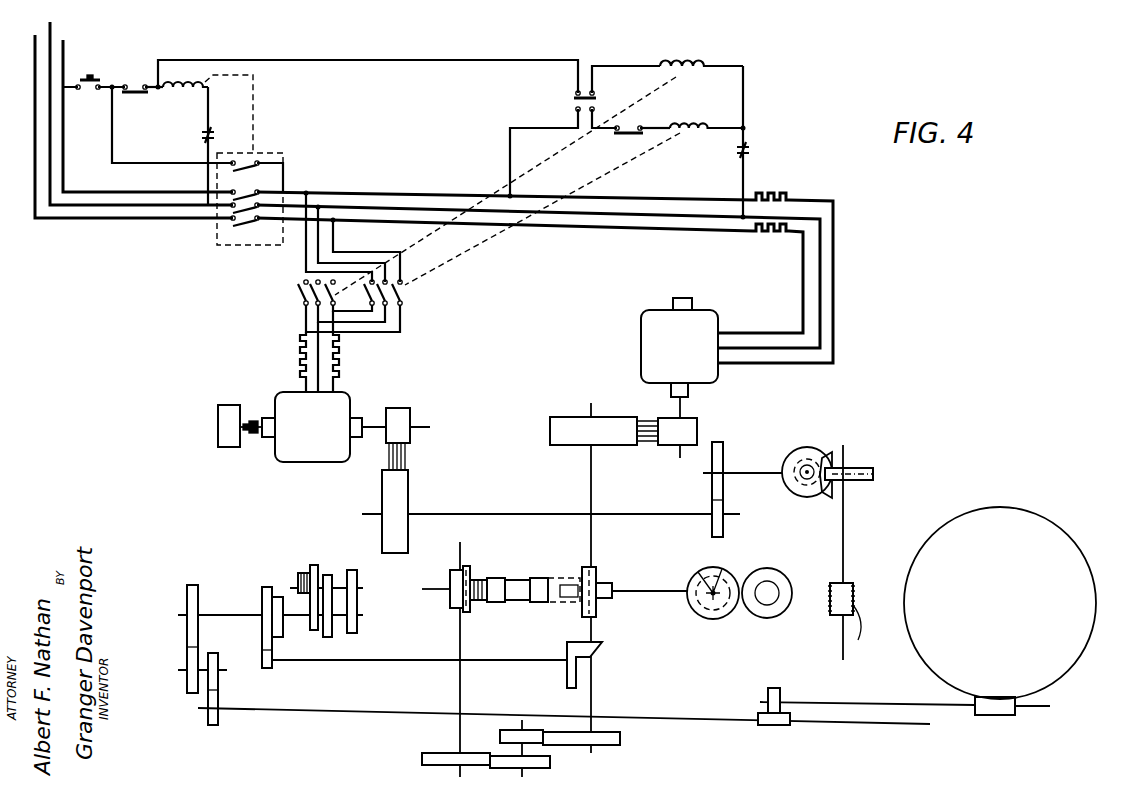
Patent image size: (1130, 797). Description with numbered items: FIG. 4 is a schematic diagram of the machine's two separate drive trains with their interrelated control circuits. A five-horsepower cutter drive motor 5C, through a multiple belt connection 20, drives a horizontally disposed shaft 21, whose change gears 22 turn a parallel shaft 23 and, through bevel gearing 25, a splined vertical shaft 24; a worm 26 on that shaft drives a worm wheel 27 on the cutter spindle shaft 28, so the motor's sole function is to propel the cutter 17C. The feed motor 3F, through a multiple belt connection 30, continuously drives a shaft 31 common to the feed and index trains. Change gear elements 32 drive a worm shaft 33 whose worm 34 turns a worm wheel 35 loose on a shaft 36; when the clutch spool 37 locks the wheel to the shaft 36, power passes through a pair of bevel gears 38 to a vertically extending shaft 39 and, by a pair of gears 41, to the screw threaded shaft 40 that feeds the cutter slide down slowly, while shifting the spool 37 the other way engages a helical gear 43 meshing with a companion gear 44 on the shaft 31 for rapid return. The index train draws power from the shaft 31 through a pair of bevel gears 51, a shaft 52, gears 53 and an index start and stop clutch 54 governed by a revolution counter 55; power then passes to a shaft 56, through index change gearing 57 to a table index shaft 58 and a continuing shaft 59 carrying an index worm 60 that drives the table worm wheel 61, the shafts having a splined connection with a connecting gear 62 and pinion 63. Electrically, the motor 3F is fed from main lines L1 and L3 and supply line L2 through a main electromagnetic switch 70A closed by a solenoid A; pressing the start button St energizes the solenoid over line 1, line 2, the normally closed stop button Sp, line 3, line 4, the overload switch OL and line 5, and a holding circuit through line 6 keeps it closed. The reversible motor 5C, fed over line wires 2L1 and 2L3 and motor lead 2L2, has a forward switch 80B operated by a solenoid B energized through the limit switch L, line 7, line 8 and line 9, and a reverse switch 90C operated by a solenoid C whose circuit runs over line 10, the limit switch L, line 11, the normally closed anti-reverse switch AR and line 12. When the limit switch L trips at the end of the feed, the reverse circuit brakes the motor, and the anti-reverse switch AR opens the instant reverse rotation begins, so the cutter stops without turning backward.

The main line L1 is at (148, 106).
The supply line L2 is at (126, 117).
The main line L3 is at (135, 104).
The start button St is at (94, 72).
The stop button Sp is at (139, 79).
The solenoid A is at (208, 108).
The line 1 is at (73, 90).
The line 2 is at (112, 125).
The line 3 is at (541, 66).
The line 4 is at (210, 104).
The line 5 is at (204, 176).
The line 6 is at (283, 177).
The overload switch OL is at (493, 144).
The main electromagnetic switch 70A is at (250, 200).
The forward switch 80B is at (321, 262).
The reverse switch 90C is at (407, 292).
The line 7 is at (642, 66).
The solenoid B is at (539, 167).
The limit switch L is at (574, 101).
The line 11 is at (597, 113).
The line 12 is at (654, 128).
The solenoid C is at (574, 194).
The anti-reverse switch AR is at (232, 404).
The line 8 is at (745, 104).
The line 9 is at (745, 186).
The line 10 is at (510, 157).
The line wire 2L1 is at (646, 206).
The motor lead 2L2 is at (592, 221).
The line wire 2L3 is at (662, 221).
The feed motor 3F is at (655, 349).
The cutter drive motor 5C is at (311, 462).
The multiple belt connection 20 is at (412, 460).
The horizontally disposed shaft 21 is at (492, 513).
The shaft 31 is at (591, 481).
The multiple belt connection 30 is at (645, 446).
The parallel shaft 23 is at (758, 472).
The change gears 22 is at (724, 506).
The splined vertical shaft 24 is at (806, 470).
The bevel gearing 25 is at (826, 495).
The worm 26 is at (815, 470).
The worm wheel 27 is at (870, 470).
The cutter spindle shaft 28 is at (843, 556).
The cutter 17C is at (859, 624).
The worm shaft 33 is at (460, 688).
The worm 34 is at (450, 597).
The worm wheel 35 is at (466, 568).
The shaft 36 is at (432, 587).
The clutch spool 37 is at (500, 578).
The helical gear 43 is at (580, 577).
The companion gear 44 is at (606, 582).
The pair of bevel gears 51 is at (590, 661).
The shaft 52 is at (514, 657).
The gears 53 is at (265, 656).
The index start and stop clutch 54 is at (278, 596).
The revolution counter 55 is at (320, 572).
The shaft 56 is at (225, 614).
The index change gearing 57 is at (187, 650).
The table index shaft 58 is at (355, 711).
The change gear elements 32 is at (565, 759).
The pair of bevel gears 38 is at (714, 573).
The vertically extending shaft 39 is at (712, 598).
The screw threaded shaft 40 is at (771, 603).
The pair of gears 41 is at (738, 618).
The shaft 59 is at (893, 700).
The index worm 60 is at (993, 716).
The worm wheel 61 is at (1067, 672).
The connecting gear 62 is at (768, 693).
The pinion 63 is at (770, 727).